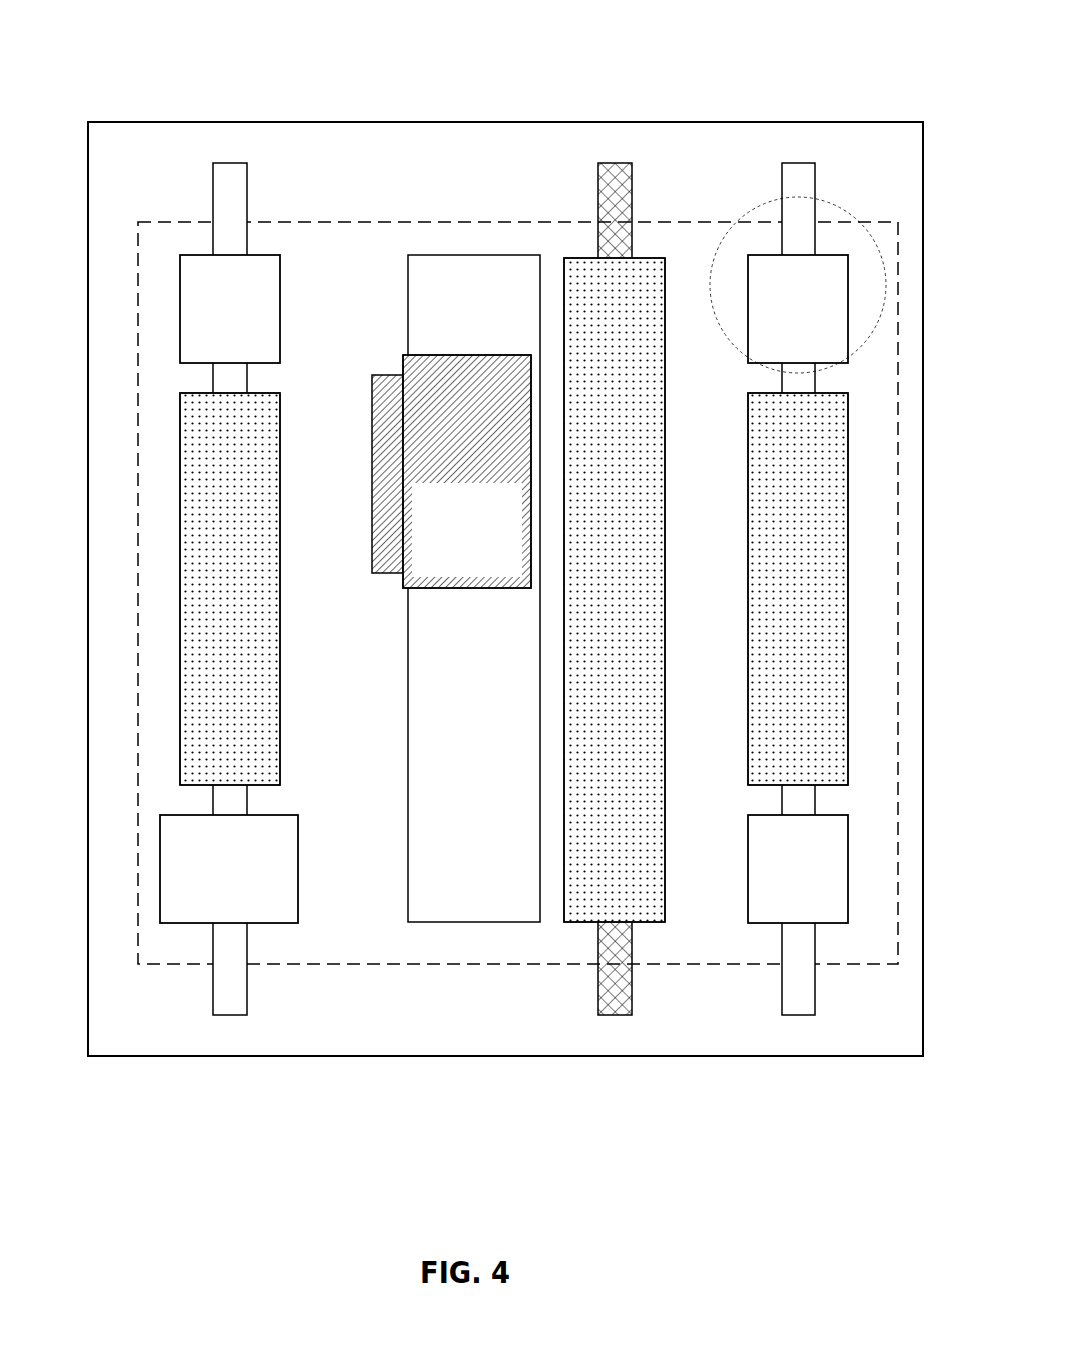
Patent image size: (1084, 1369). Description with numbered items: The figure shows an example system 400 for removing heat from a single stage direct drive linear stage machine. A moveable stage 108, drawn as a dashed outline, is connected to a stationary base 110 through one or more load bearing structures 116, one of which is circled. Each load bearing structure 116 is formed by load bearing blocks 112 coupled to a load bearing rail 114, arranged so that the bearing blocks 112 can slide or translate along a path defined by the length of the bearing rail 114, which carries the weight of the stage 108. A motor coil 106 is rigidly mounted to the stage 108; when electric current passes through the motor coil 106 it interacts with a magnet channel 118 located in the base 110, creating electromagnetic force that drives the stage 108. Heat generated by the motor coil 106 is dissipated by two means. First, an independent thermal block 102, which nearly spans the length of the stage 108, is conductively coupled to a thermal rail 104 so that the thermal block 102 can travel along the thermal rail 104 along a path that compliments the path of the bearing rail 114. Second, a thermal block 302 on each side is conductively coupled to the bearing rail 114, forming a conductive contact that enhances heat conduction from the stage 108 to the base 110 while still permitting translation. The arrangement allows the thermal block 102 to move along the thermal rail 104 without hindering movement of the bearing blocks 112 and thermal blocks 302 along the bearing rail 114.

The system 400 is at (366, 56).
The base 110 is at (230, 122).
The stage 108 is at (757, 964).
The bearing rail 114 is at (782, 207).
The bearing block 112 is at (198, 255).
The thermal block 302 is at (748, 632).
The thermal block 102 is at (580, 922).
The thermal rail 104 is at (615, 1015).
The motor coil 106 is at (388, 575).
The magnet channel 118 is at (410, 672).
The load bearing structure 116 is at (843, 197).